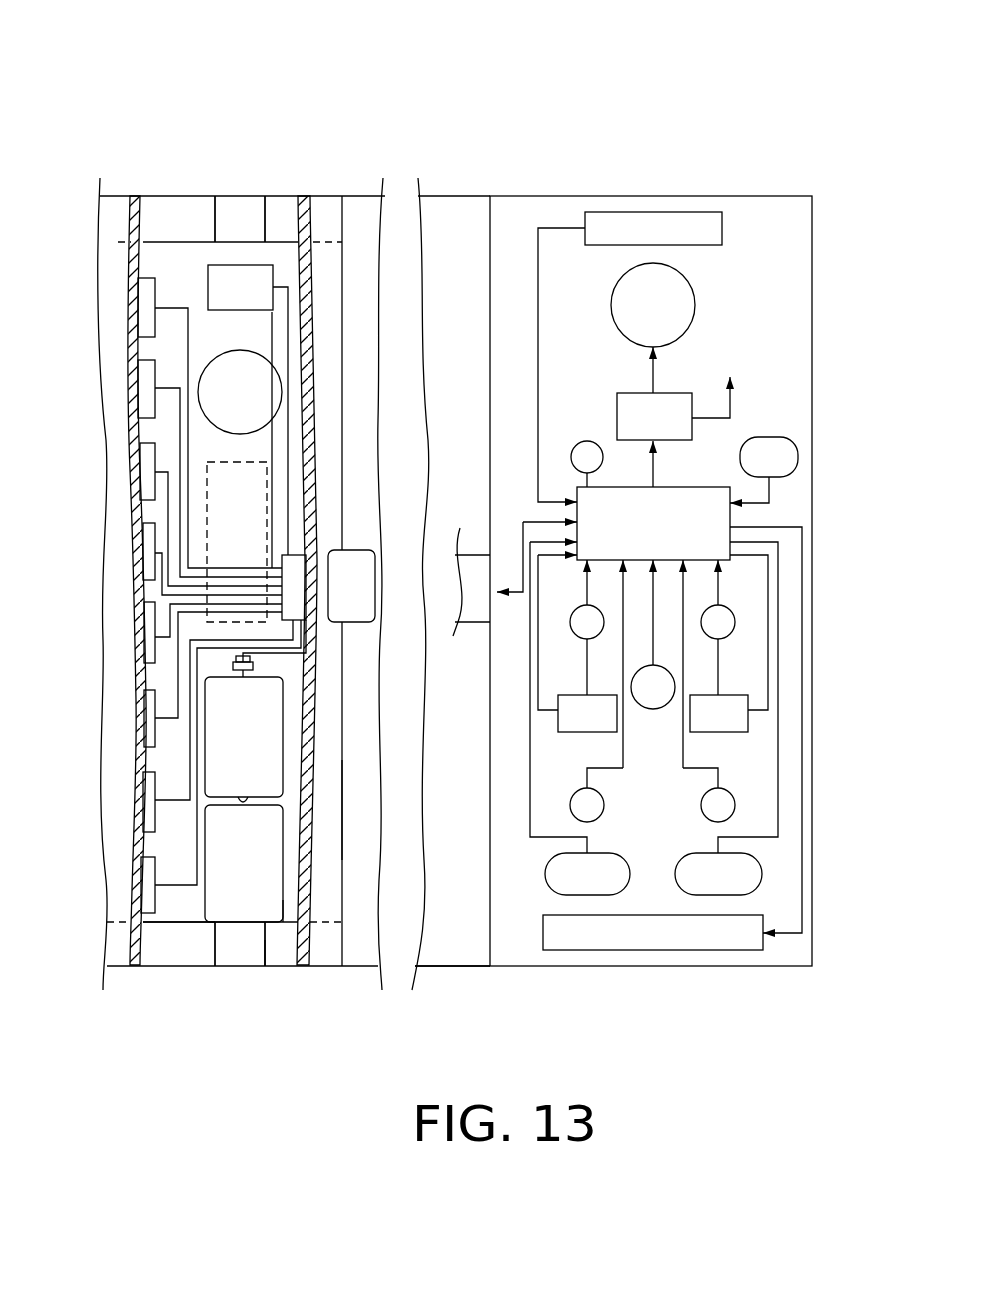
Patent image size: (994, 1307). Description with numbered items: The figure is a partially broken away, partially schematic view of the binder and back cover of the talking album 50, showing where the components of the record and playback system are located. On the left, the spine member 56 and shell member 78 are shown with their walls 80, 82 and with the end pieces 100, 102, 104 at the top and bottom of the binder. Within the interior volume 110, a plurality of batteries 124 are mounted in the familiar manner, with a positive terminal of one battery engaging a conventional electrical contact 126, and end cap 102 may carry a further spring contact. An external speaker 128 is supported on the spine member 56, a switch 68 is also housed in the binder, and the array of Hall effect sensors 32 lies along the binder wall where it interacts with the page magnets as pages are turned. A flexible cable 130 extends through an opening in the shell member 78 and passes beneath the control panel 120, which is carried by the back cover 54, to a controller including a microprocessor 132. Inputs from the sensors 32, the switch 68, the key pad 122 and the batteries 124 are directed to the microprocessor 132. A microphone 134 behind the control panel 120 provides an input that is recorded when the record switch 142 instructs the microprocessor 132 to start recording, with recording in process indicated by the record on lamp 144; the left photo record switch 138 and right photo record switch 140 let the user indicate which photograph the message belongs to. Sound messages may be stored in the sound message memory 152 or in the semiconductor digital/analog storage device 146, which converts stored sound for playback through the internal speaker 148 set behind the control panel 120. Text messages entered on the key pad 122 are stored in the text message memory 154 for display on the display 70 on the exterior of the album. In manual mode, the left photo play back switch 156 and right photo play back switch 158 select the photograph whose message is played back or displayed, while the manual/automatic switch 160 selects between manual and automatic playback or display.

The talking album 50 is at (215, 105).
The control panel 120 is at (773, 118).
The housing side wall 80 is at (120, 195).
The top end cap 100 is at (240, 195).
The key pad 122 is at (655, 212).
The switch 68 is at (208, 285).
The external speaker 128 is at (238, 350).
The internal speaker 148 is at (696, 306).
The display 70 is at (240, 461).
The storage device 146 is at (617, 418).
The record on lamp 144 is at (538, 452).
The microphone 134 is at (768, 437).
The microprocessor 132 is at (680, 484).
The flexible cable 130 is at (367, 550).
The interior volume 110 is at (272, 665).
The electrical contact 126 is at (232, 667).
The batteries 124 is at (267, 828).
The shell member 78 is at (322, 838).
The spine member 56 is at (290, 905).
The Hall effect sensors 32 is at (157, 897).
The wall 82 is at (126, 968).
The end cap 102 is at (252, 966).
The bottom end cap section 104 is at (273, 966).
The back cover 54 is at (453, 966).
The left photo record switch 138 is at (580, 637).
The right photo record switch 140 is at (703, 628).
The record switch 142 is at (650, 706).
The sound message memory 152 is at (587, 732).
The text message memory 154 is at (718, 732).
The left photo play back switch 156 is at (603, 803).
The right photo play back switch 158 is at (698, 803).
The manual/automatic switch 160 is at (545, 874).